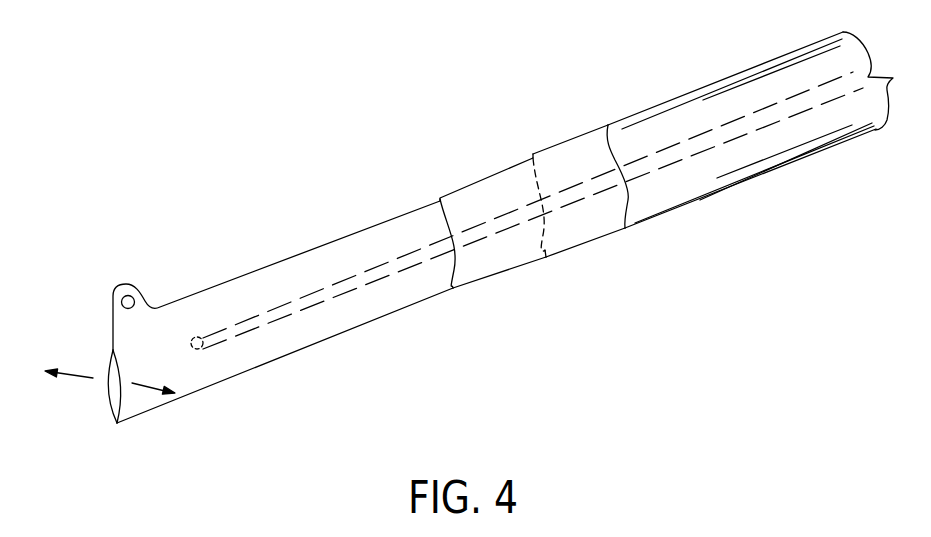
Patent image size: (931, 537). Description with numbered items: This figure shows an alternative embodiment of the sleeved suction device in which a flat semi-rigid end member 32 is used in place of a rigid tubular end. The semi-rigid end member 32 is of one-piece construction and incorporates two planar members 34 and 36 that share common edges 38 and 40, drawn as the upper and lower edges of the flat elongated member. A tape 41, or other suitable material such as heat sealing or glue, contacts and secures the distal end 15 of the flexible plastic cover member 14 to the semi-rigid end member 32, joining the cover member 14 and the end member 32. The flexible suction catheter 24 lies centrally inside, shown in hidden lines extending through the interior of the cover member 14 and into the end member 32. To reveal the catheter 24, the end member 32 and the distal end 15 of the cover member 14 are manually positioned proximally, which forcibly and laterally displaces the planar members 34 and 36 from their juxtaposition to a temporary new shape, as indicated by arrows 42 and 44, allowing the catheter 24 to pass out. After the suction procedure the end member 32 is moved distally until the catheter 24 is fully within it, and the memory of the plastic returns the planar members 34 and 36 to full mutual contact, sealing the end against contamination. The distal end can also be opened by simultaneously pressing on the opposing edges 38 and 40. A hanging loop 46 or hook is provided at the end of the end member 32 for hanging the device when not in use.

The flexible plastic cover member 14 is at (722, 80).
The distal end of the flexible cover member 15 is at (633, 118).
The flexible suction catheter tube 24 is at (358, 272).
The flat semi-rigid end member 32 is at (283, 312).
The planar member 34 is at (110, 360).
The planar member 36 is at (118, 363).
The common edge 38 is at (228, 282).
The common edge 40 is at (258, 367).
The tape 41 is at (500, 187).
The arrow 42 is at (73, 378).
The arrow 44 is at (140, 388).
The hanging loop 46 is at (127, 292).